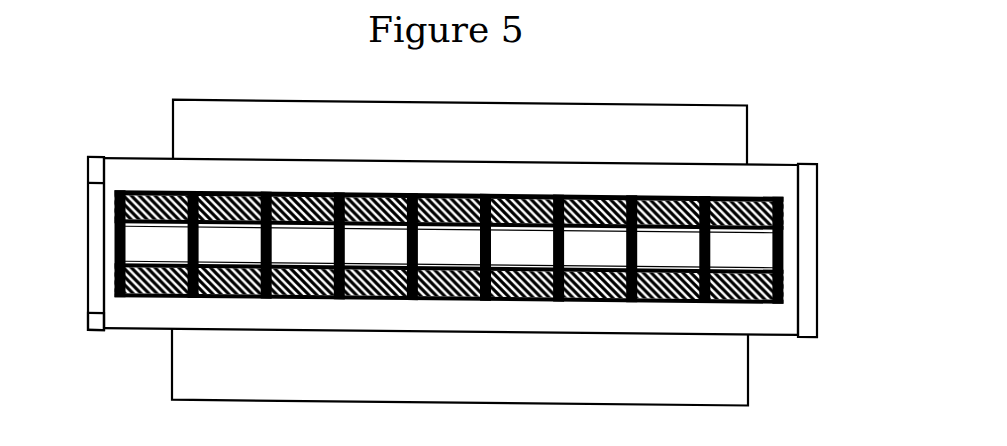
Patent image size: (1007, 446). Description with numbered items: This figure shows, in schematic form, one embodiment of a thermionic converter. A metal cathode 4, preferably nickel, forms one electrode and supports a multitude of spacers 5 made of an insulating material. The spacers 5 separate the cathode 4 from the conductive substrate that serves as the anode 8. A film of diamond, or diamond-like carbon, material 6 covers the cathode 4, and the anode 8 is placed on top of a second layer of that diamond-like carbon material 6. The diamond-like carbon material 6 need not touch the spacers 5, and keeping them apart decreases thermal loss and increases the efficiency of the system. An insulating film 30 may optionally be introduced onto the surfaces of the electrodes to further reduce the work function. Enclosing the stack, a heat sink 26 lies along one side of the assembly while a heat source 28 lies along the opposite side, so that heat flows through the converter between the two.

The substrate, cathode 4 is at (88, 313).
The spacers 5 is at (110, 228).
The diamond, or diamond-like carbon, material 6 is at (110, 203).
The conductive substrate, anode 8 is at (88, 183).
The heat sink 26 is at (733, 138).
The heat source 28 is at (738, 378).
The insulating film 30 is at (758, 232).